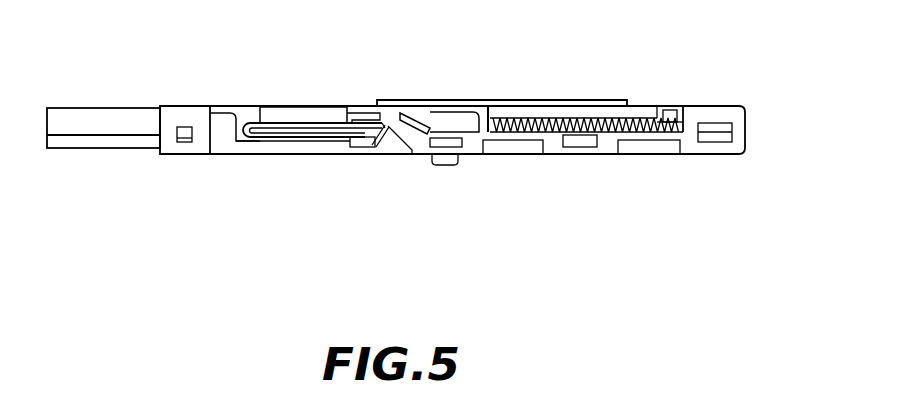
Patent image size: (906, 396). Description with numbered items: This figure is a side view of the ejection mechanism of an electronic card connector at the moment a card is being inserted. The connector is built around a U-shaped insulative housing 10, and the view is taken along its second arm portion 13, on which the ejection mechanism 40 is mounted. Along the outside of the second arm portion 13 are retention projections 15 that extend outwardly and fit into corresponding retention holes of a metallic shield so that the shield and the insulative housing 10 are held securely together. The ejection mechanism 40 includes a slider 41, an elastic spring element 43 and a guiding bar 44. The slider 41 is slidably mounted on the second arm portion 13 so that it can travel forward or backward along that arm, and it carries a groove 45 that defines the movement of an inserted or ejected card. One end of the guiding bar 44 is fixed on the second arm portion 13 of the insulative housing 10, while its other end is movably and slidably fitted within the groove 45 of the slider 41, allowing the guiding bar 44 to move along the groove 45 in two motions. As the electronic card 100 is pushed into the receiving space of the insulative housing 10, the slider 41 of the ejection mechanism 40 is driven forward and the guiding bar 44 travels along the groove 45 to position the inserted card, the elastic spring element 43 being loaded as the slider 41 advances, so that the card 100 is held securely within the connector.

The electronic card 100 is at (73, 118).
The insulative housing 10 is at (752, 147).
The second arm portion 13 is at (190, 160).
The retention projection 15 is at (177, 145).
The ejection mechanism 40 is at (401, 161).
The slider 41 is at (460, 117).
The elastic spring element 43 is at (560, 133).
The guiding bar 44 is at (267, 140).
The groove 45 is at (427, 128).